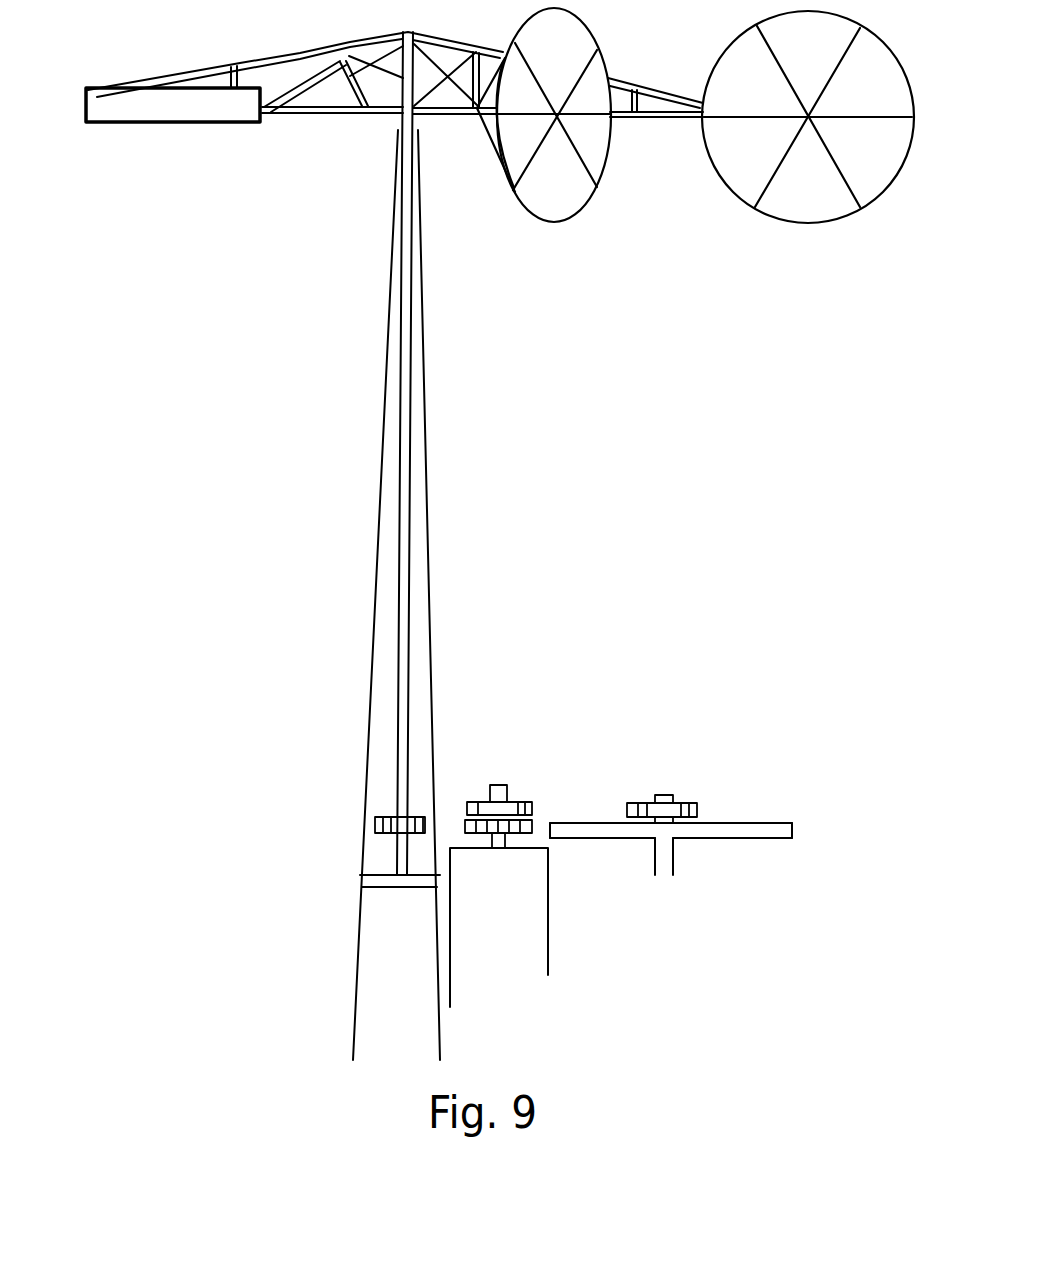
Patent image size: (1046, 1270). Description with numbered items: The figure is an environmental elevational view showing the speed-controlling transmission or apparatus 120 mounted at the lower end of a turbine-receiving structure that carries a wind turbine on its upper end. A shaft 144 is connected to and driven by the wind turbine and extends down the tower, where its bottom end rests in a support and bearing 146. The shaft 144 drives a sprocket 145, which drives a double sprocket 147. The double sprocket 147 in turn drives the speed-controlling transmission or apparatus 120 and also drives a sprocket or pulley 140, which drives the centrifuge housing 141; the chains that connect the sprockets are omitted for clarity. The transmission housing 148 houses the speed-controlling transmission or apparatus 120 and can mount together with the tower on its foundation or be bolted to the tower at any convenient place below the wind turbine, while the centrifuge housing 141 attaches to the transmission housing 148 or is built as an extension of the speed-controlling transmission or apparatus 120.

The speed-controlling transmission or apparatus 120 is at (533, 826).
The sprocket or pulley 140 is at (692, 804).
The centrifuge housing 141 is at (743, 839).
The shaft 144 is at (420, 546).
The sprocket 145 is at (372, 830).
The support and bearing 146 is at (360, 876).
The double sprocket 147 is at (469, 797).
The transmission housing 148 is at (549, 932).